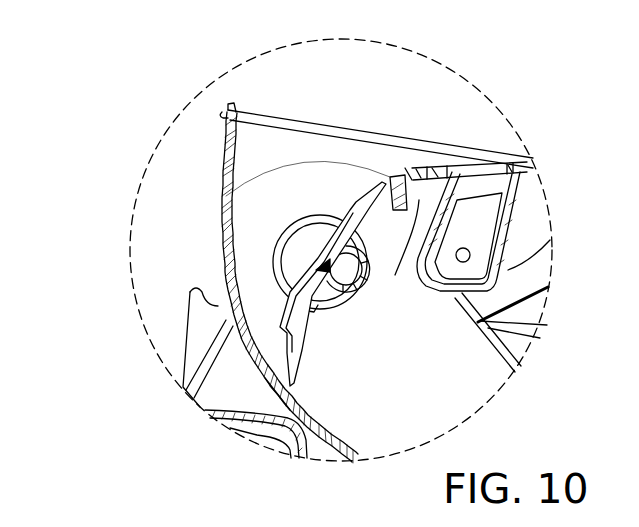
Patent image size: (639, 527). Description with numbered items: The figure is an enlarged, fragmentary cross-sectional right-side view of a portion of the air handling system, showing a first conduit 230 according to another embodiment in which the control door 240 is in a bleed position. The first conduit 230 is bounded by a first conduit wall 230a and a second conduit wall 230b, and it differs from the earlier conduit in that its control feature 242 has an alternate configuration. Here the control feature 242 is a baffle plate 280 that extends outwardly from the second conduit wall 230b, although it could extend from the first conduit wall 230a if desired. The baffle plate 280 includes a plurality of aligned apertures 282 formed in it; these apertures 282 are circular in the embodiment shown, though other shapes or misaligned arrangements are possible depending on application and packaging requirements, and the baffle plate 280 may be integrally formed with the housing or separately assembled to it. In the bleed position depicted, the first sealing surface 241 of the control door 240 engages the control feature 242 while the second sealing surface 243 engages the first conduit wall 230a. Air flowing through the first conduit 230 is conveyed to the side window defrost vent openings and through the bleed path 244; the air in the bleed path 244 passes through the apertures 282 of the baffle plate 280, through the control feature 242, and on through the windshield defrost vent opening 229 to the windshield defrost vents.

The windshield defrost vent opening 229 is at (240, 114).
The first conduit 230 is at (212, 142).
The first conduit wall 230a is at (231, 268).
The second conduit wall 230b is at (406, 262).
The control door 240 is at (354, 335).
The first sealing surface 241 is at (390, 178).
The control feature 242 is at (399, 158).
The second sealing surface 243 is at (268, 392).
The bleed path 244 is at (393, 283).
The baffle plate 280 is at (390, 283).
The apertures 282 is at (407, 210).